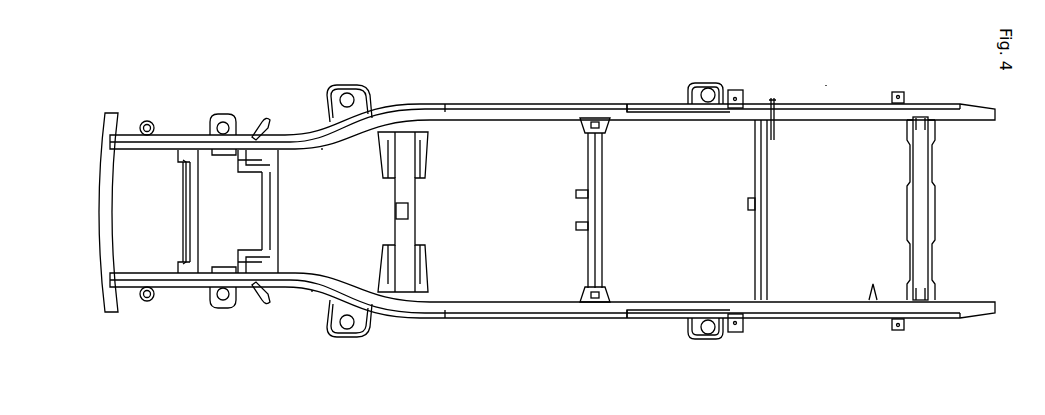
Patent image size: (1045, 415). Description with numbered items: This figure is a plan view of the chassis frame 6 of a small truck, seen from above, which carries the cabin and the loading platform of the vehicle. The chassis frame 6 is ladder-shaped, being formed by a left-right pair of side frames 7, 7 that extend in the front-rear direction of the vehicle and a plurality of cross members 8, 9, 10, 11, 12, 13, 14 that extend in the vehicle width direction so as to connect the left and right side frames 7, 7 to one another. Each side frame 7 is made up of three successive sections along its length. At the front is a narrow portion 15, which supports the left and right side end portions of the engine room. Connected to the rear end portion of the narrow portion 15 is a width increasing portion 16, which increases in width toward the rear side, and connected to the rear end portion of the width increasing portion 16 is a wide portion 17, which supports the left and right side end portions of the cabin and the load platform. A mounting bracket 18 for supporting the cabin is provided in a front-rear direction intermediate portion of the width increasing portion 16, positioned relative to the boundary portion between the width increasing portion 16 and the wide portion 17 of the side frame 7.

The chassis frame 6 is at (822, 88).
The side frame 7 is at (502, 102).
The cross member 8 is at (97, 208).
The cross member 9 is at (183, 208).
The cross member 10 is at (262, 208).
The cross member 11 is at (415, 232).
The cross member 12 is at (602, 232).
The cross member 13 is at (767, 230).
The cross member 14 is at (935, 230).
The narrow portion 15 is at (176, 134).
The width increasing portion 16 is at (322, 150).
The wide portion 17 is at (652, 102).
The mounting bracket 18 is at (348, 85).